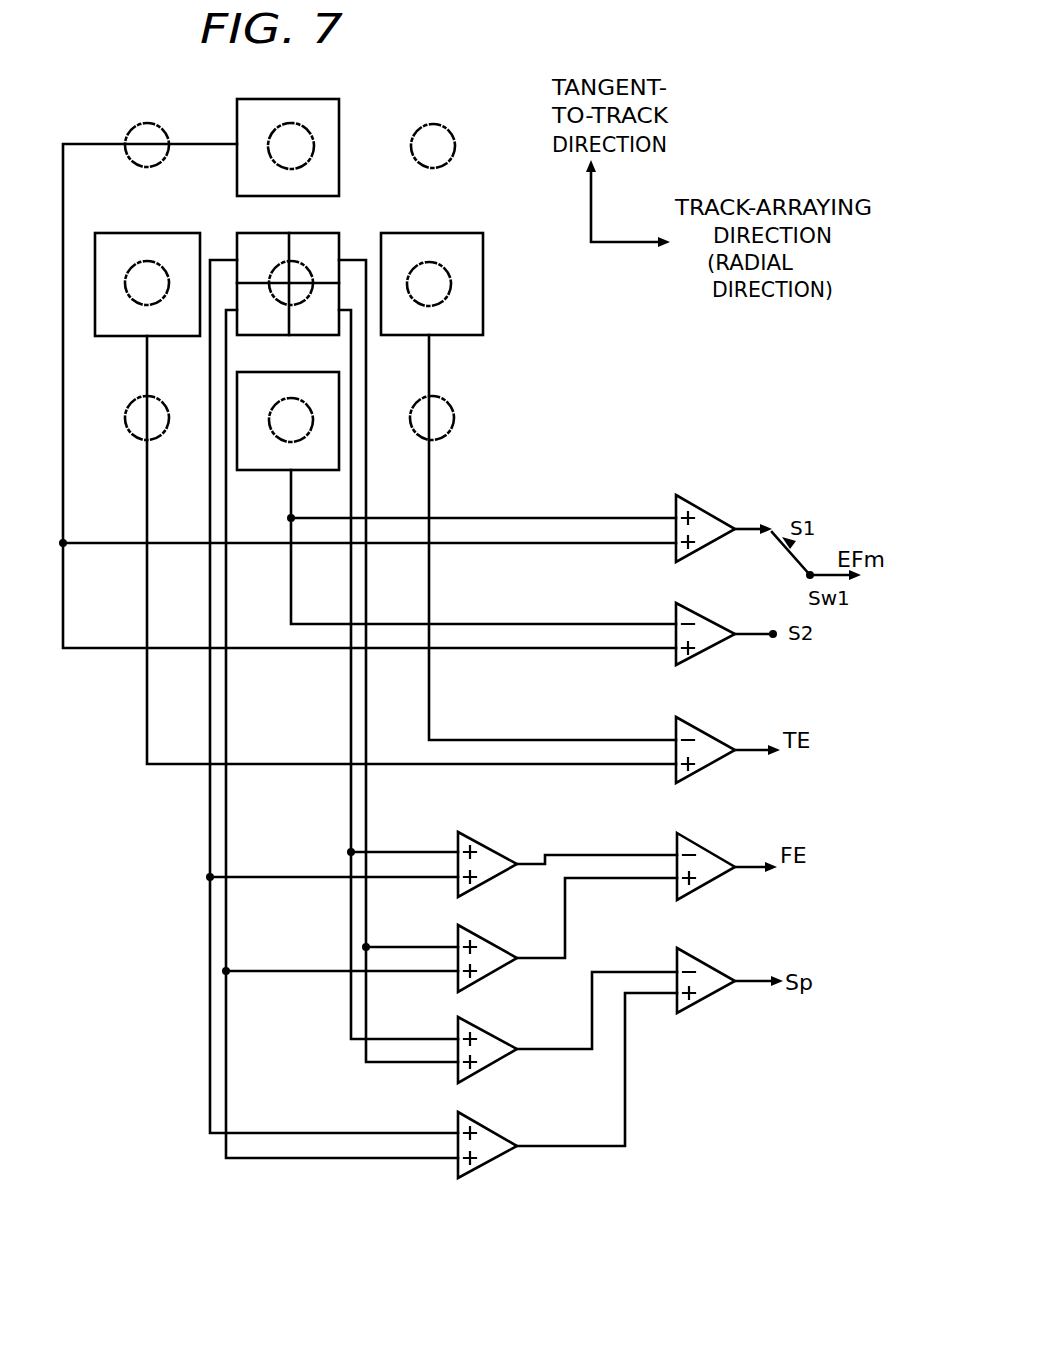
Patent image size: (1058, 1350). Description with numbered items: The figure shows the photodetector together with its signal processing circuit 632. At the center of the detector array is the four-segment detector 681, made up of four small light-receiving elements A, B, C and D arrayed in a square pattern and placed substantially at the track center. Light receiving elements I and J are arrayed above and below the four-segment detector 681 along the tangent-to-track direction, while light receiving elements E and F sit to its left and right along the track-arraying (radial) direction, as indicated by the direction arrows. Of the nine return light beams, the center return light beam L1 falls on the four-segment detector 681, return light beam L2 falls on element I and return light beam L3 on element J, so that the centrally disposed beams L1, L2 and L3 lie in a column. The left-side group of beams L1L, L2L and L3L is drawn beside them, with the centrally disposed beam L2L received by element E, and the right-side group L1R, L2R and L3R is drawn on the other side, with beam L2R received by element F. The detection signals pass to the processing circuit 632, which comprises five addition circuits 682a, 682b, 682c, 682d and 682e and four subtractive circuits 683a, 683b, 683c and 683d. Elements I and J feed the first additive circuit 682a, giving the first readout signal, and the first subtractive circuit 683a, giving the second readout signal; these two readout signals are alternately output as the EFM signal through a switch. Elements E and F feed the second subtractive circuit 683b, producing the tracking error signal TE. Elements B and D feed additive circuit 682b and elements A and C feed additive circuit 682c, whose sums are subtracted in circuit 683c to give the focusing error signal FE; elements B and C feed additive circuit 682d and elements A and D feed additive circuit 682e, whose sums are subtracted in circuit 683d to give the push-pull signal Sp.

The four-segment detector 681 is at (341, 234).
The processing circuit 632 is at (575, 515).
The first additive circuit 682a is at (709, 510).
The second additive circuit 682b is at (498, 825).
The third additive circuit 682c is at (505, 923).
The fourth additive circuit 682d is at (510, 1020).
The fifth additive circuit 682e is at (493, 1127).
The first subtractive circuit 683a is at (709, 617).
The second subtractive circuit 683b is at (717, 714).
The third subtractive circuit 683c is at (704, 842).
The fourth subtractive circuit 683d is at (718, 942).
The center return light beam L1 is at (282, 240).
The return light beam L1L is at (167, 130).
The return light beam L1R is at (437, 123).
The return light beam L2 is at (313, 98).
The return light beam L2L is at (147, 260).
The return light beam L2R is at (453, 287).
The return light beam L3 is at (252, 470).
The return light beam L3L is at (160, 437).
The return light beam L3R is at (450, 435).